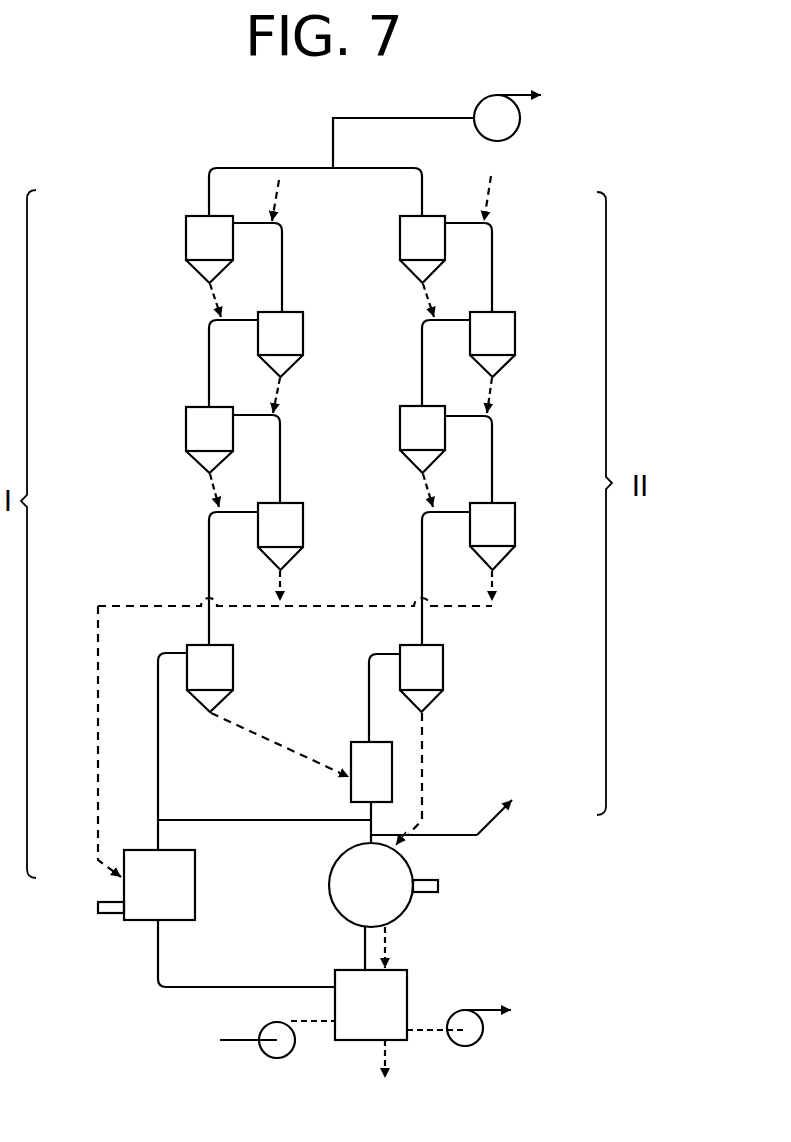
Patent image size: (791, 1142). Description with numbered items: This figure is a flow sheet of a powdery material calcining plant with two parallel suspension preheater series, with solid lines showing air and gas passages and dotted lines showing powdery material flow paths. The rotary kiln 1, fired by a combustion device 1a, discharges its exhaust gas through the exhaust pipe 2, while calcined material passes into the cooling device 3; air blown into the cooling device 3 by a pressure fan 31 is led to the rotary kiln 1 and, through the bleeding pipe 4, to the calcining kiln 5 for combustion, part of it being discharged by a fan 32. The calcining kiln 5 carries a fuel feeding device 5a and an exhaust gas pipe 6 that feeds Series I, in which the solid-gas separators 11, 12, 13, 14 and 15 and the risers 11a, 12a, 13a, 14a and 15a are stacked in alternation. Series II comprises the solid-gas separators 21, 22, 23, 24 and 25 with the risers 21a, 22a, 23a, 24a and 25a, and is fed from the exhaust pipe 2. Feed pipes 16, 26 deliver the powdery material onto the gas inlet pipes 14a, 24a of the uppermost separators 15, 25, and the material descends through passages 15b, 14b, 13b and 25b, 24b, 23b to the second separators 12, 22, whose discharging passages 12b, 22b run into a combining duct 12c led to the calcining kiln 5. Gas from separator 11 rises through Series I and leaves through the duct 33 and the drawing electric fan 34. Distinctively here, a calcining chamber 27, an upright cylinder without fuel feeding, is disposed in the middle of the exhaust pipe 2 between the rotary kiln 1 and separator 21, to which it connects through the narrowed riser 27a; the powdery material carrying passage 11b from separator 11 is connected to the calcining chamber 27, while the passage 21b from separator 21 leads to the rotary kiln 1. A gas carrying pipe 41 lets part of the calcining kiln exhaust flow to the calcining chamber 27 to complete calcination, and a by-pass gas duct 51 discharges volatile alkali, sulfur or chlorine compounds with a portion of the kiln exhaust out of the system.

The rotary kiln 1 is at (371, 906).
The combustion device 1a is at (438, 886).
The exhaust pipe 2 is at (374, 825).
The cooling device 3 is at (371, 1024).
The bleeding pipe 4 is at (243, 987).
The calcining kiln 5 is at (159, 885).
The fuel feeding device 5a is at (108, 914).
The exhaust gas pipe 6 is at (158, 734).
The solid-gas separator 11 is at (210, 678).
The riser 11a is at (209, 560).
The powdery material carrying passage 11b is at (272, 744).
The second solid-gas separator 12 is at (280, 536).
The riser 12a is at (280, 460).
The powdery material discharging passage 12b is at (283, 590).
The combining duct 12c is at (98, 636).
The solid-gas separator 13 is at (209, 440).
The riser 13a is at (209, 368).
The powdery material passage 13b is at (210, 492).
The solid-gas separator 14 is at (280, 344).
The riser 14a is at (282, 270).
The powdery material passage 14b is at (283, 396).
The uppermost solid-gas separator 15 is at (209, 249).
The riser 15a is at (209, 188).
The powdery material passage 15b is at (212, 300).
The feed pipe 16 is at (284, 200).
The solid-gas separator 21 is at (421, 678).
The riser 21a is at (422, 560).
The powdery material carrying passage 21b is at (424, 774).
The second solid-gas separator 22 is at (492, 536).
The riser 22a is at (492, 460).
The powdery material discharging passage 22b is at (494, 590).
The solid-gas separator 23 is at (422, 439).
The riser 23a is at (422, 368).
The powdery material passage 23b is at (422, 492).
The solid-gas separator 24 is at (492, 344).
The riser 24a is at (492, 268).
The powdery material passage 24b is at (494, 396).
The uppermost solid-gas separator 25 is at (422, 249).
The riser 25a is at (373, 168).
The powdery material passage 25b is at (426, 300).
The feed pipe 26 is at (495, 198).
The calcining chamber 27 is at (371, 772).
The riser 27a is at (369, 678).
The pressure fan 31 is at (285, 1055).
The fan 32 is at (476, 1043).
The duct 33 is at (333, 126).
The drawing electric fan 34 is at (520, 118).
The gas carrying pipe 41 is at (217, 820).
The gas duct 51 is at (486, 834).